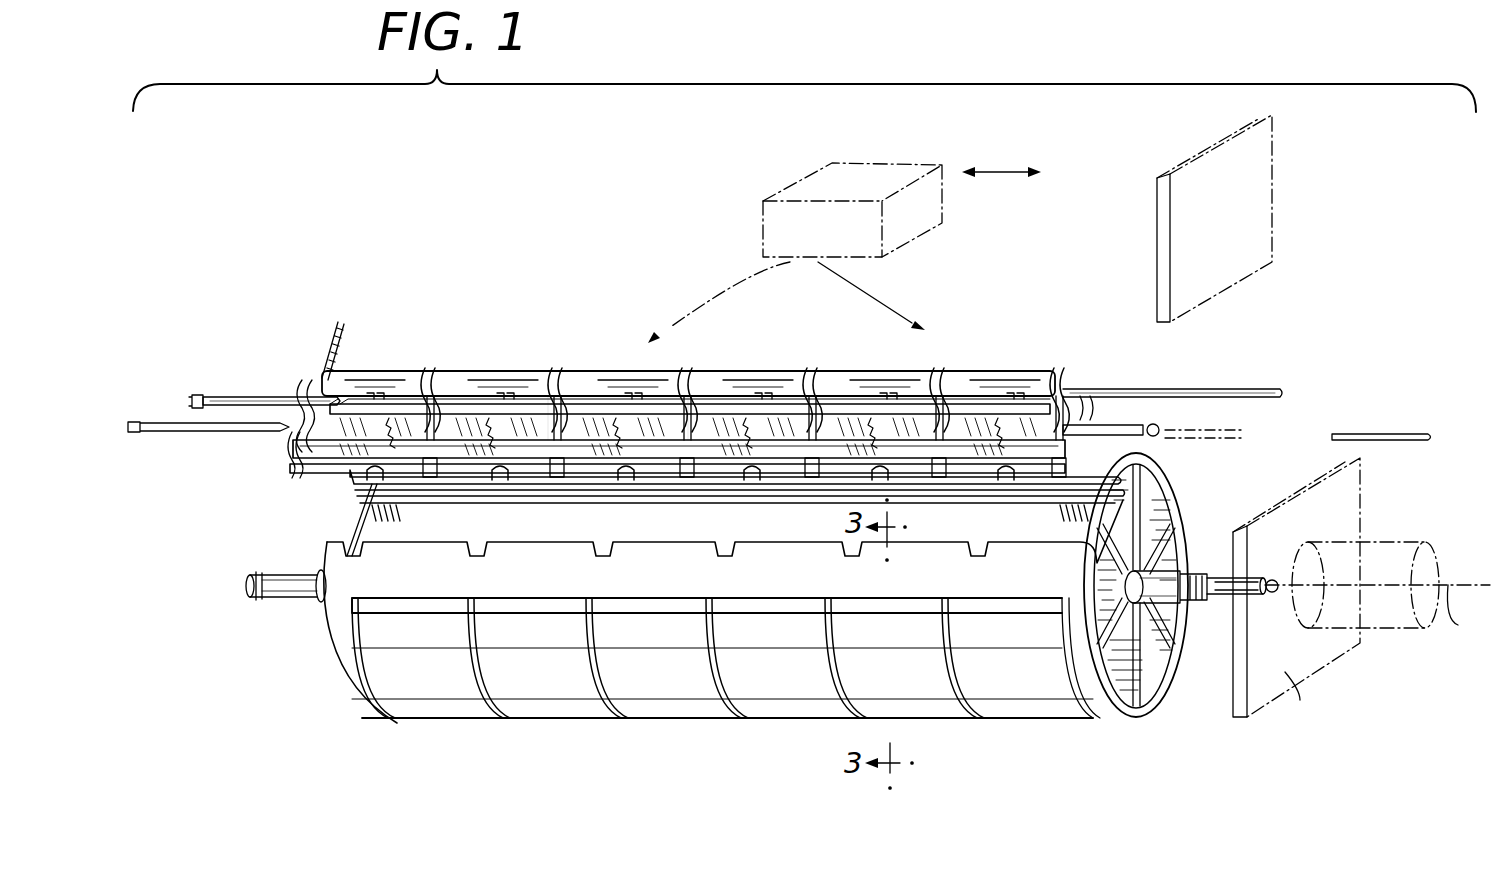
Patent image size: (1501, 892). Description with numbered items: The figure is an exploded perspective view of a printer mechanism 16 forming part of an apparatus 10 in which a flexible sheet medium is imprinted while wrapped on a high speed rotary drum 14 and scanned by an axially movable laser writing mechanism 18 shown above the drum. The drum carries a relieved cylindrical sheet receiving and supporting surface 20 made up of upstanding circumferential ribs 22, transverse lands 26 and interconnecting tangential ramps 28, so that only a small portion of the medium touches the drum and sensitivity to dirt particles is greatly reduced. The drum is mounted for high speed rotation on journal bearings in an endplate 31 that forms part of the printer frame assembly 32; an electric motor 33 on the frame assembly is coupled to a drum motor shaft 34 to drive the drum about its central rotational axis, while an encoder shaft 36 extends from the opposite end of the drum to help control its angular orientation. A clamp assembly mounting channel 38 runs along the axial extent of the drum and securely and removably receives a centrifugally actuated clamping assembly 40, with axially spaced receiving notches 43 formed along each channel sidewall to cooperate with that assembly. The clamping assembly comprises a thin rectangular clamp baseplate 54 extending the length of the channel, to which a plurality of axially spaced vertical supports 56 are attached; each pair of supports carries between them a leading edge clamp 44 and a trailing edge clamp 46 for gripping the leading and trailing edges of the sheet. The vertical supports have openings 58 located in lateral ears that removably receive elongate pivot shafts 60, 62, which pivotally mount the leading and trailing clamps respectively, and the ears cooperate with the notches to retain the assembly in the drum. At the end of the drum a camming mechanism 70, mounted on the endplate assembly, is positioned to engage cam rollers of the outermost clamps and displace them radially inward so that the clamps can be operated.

The apparatus 10 is at (230, 305).
The rotary drum 14 is at (778, 704).
The printer mechanism 16 is at (512, 208).
The axially movable laser writing mechanism 18 is at (920, 211).
The relieved cylindrical sheet receiving and supporting surface 20 is at (337, 637).
The circumferential ribs 22 is at (413, 587).
The transverse lands 26 is at (340, 580).
The interconnecting tangential ramps 28 is at (383, 698).
The endplate 31 is at (1292, 680).
The printer frame assembly 32 is at (1355, 503).
The electric motor 33 is at (1385, 545).
The drum motor shaft 34 is at (1222, 585).
The encoder shaft 36 is at (287, 575).
The clamp assembly mounting channel 38 is at (435, 535).
The centrifugally actuated clamping assembly 40 is at (792, 345).
The receiving notches 43 is at (372, 484).
The leading edge clamp 44 is at (272, 455).
The trailing edge clamp 46 is at (297, 375).
The clamp baseplate 54 is at (1082, 415).
The vertical supports 56 is at (560, 378).
The openings 58 is at (435, 373).
The pivot shaft 60 is at (1232, 390).
The pivot shaft 62 is at (1360, 434).
The camming mechanism 70 is at (1222, 216).